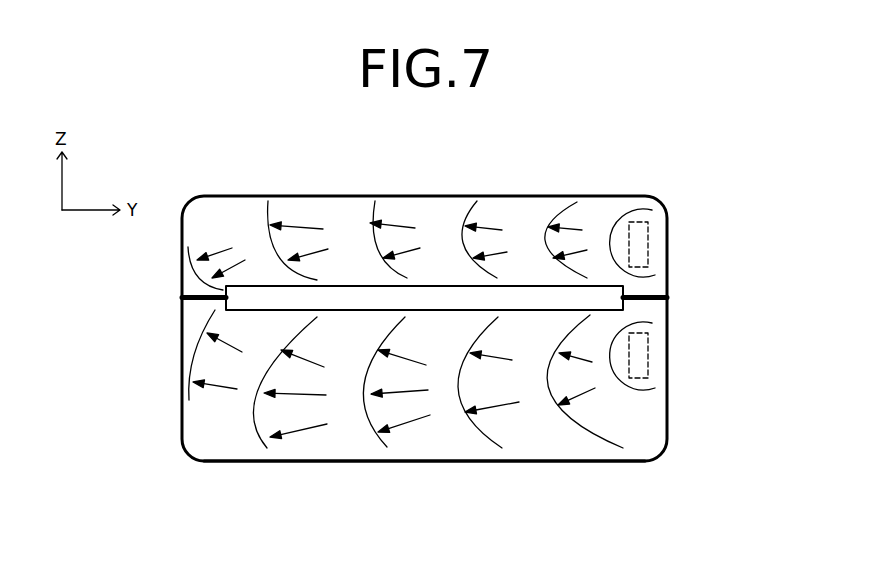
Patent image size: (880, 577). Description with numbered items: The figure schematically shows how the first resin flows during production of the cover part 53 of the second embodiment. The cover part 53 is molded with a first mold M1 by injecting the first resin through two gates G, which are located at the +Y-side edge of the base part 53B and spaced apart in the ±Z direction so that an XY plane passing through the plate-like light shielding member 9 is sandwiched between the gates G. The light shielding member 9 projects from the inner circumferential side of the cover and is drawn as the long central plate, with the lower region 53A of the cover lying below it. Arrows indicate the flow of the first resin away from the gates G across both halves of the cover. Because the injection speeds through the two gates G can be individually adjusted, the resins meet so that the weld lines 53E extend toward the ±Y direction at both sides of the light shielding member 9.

The cover part 53 is at (534, 191).
The lower portion of housing 53A is at (522, 425).
The base part 53B is at (617, 461).
The weld lines 53E is at (199, 296).
The first mold M1 is at (420, 196).
The light shielding member 9 is at (367, 303).
The gates G is at (642, 223).